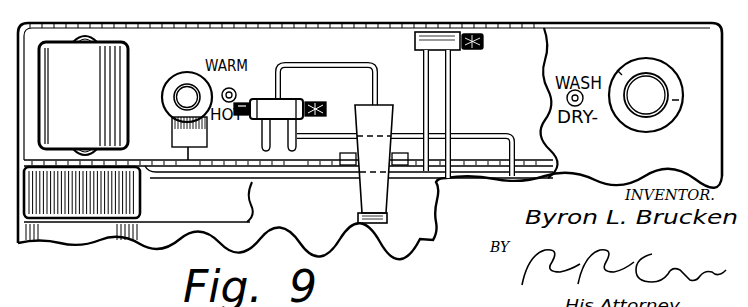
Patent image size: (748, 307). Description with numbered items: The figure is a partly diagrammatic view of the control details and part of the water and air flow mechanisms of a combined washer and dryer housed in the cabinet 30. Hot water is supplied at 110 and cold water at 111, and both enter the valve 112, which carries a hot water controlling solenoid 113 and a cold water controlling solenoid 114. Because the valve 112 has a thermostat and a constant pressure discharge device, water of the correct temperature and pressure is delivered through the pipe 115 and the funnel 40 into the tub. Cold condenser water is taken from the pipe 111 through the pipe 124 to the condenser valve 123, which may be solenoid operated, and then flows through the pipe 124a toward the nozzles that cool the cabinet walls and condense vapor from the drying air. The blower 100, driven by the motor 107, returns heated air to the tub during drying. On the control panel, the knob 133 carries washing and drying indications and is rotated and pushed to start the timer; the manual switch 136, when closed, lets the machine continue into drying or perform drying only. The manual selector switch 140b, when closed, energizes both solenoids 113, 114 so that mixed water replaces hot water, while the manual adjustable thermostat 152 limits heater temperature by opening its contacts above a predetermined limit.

The cabinet 30 is at (668, 23).
The funnel 40 is at (372, 196).
The blower 100 is at (120, 200).
The motor 107 is at (106, 126).
The hot water supply 110 is at (296, 143).
The cold water supply pipe 111 is at (262, 142).
The valve 112 is at (291, 100).
The hot water controlling solenoid 113 is at (314, 104).
The cold water controlling solenoid 114 is at (240, 102).
The pipe 115 is at (322, 63).
The condenser valve 123 is at (428, 40).
The pipe 124 is at (420, 98).
The pipe 124a is at (451, 92).
The knob 133 is at (660, 95).
The manual switch 136 is at (580, 94).
The manual selector switch 140b is at (231, 87).
The manual adjustable thermostat 152 is at (190, 82).